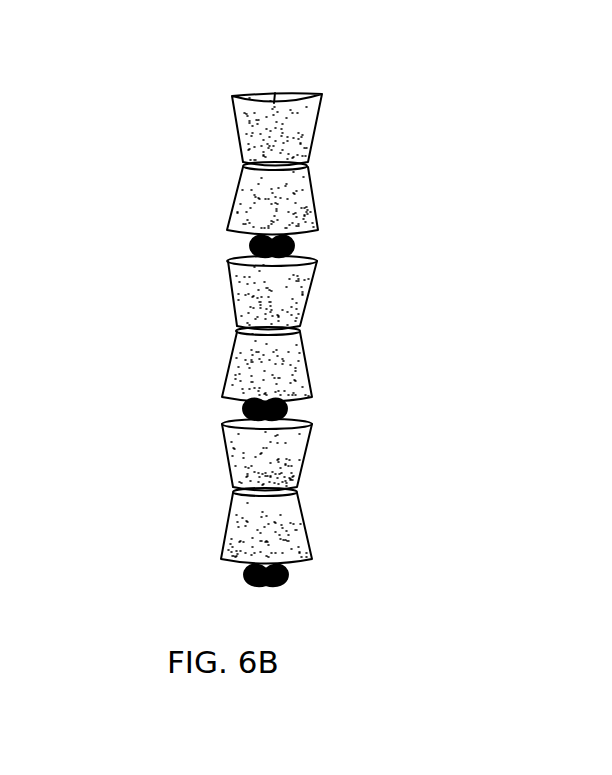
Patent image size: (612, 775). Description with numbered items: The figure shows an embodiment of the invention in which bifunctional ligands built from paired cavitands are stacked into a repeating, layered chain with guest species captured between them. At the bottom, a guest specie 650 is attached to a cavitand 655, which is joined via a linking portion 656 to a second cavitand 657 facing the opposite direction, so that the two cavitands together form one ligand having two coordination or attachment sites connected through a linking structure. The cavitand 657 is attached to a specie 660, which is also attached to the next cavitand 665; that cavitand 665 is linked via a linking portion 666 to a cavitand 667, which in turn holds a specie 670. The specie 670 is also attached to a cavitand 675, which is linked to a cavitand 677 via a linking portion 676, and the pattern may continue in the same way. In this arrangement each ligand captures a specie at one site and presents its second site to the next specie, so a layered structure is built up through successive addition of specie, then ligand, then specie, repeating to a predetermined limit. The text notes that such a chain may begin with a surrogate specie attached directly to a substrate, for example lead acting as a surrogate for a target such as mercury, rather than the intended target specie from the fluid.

The cavitand 677 is at (323, 127).
The linking portion 676 is at (240, 166).
The cavitand 675 is at (318, 181).
The specie 670 is at (242, 247).
The cavitand 667 is at (318, 284).
The linking portion 666 is at (237, 328).
The cavitand 665 is at (315, 359).
The specie 660 is at (235, 408).
The cavitand 657 is at (315, 445).
The linking portion 656 is at (238, 492).
The cavitand 655 is at (313, 521).
The guest specie 650 is at (240, 577).